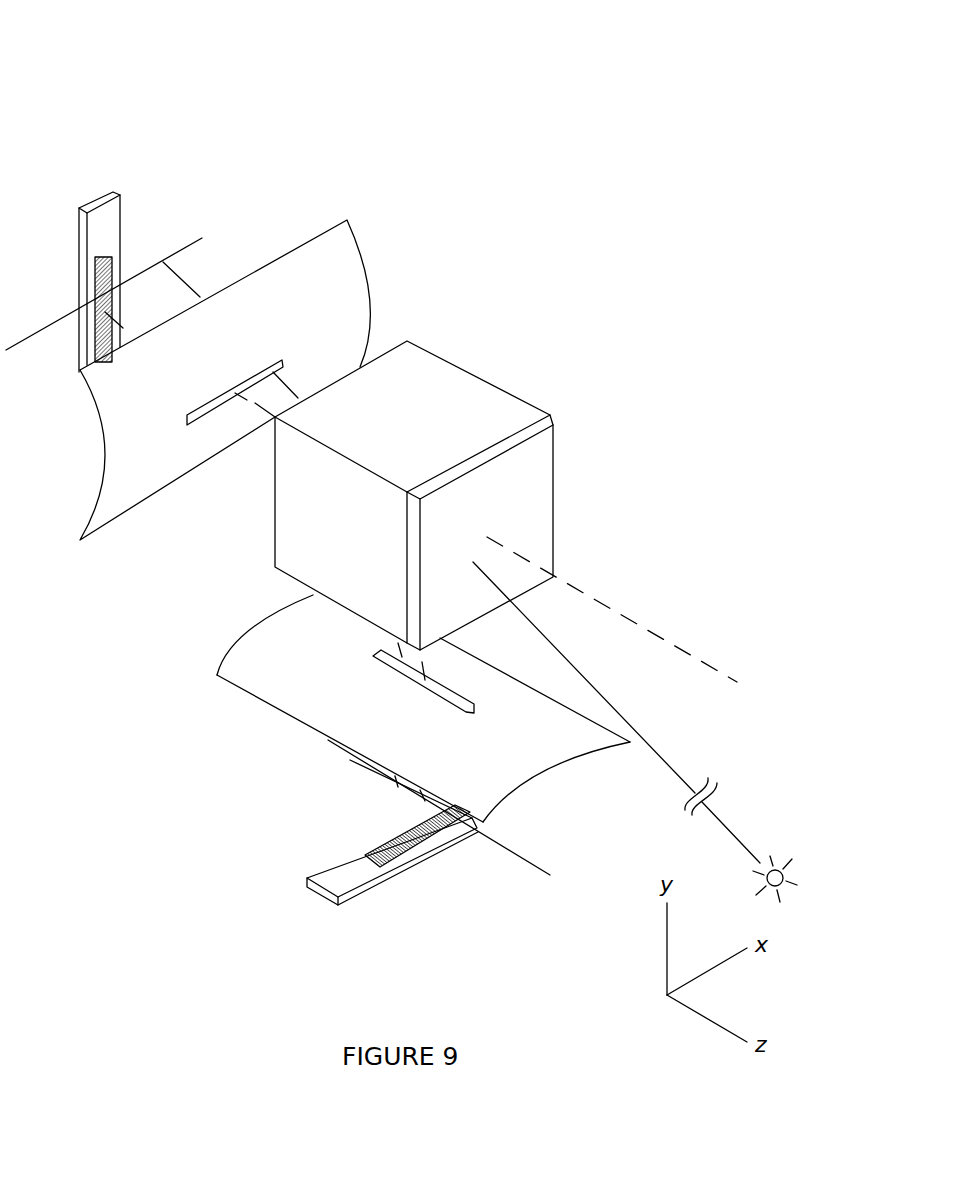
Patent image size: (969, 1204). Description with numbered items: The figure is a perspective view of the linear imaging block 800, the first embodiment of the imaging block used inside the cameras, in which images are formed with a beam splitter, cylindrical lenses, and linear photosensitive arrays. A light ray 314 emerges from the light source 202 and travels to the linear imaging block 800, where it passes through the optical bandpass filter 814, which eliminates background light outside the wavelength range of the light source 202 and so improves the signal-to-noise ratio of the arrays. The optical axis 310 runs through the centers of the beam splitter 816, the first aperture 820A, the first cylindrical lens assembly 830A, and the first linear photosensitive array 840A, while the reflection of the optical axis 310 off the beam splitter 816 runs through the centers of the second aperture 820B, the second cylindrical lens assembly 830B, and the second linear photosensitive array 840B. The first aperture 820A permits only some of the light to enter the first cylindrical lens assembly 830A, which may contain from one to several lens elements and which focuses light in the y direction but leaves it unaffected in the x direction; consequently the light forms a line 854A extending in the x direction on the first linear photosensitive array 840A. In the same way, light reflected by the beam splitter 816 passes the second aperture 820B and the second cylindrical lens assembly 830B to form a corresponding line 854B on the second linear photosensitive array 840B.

The linear imaging block 800 is at (172, 70).
The first linear photosensitive array 840A is at (97, 193).
The line 854A is at (180, 250).
The first cylindrical lens assembly 830A is at (362, 255).
The first aperture 820A is at (283, 363).
The beam splitter 816 is at (477, 373).
The optical bandpass filter 814 is at (548, 422).
The optical axis 310 is at (703, 658).
The light ray 314 is at (630, 713).
The light source 202 is at (777, 860).
The second aperture 820B is at (390, 667).
The second cylindrical lens assembly 830B is at (275, 712).
The line 854B is at (497, 843).
The second linear photosensitive array 840B is at (388, 875).